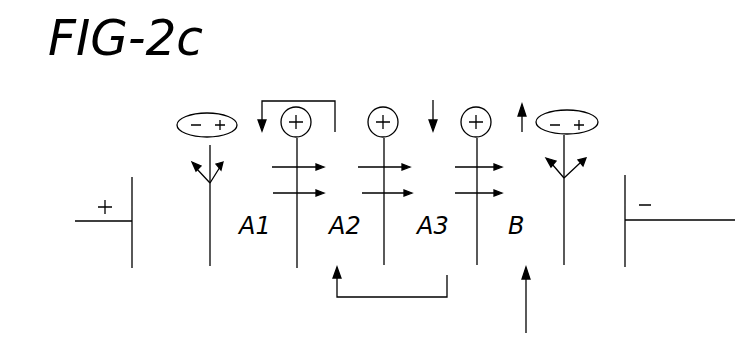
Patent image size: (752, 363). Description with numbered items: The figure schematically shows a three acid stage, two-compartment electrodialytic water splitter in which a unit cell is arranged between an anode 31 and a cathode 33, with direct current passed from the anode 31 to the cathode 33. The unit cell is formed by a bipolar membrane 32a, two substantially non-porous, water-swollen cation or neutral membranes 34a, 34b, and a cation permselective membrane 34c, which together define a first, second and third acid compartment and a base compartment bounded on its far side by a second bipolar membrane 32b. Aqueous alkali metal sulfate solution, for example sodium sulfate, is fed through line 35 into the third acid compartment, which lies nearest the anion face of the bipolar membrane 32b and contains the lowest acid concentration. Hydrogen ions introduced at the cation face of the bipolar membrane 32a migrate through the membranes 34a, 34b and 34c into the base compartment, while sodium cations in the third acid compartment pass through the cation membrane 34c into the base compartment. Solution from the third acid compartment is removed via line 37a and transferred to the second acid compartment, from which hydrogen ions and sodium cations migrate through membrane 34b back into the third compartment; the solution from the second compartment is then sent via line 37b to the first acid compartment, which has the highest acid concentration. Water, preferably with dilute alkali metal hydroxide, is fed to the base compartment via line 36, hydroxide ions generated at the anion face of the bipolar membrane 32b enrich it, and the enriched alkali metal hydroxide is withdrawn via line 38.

The anode 31 is at (132, 243).
The bipolar membrane 32a is at (210, 266).
The bipolar membrane 32b is at (564, 265).
The cathode 33 is at (625, 255).
The cation or neutral membrane 34a is at (297, 268).
The cation or neutral membrane 34b is at (384, 265).
The cation permselective membrane 34c is at (477, 265).
The line 35 is at (433, 100).
The line 36 is at (526, 323).
The line 37a is at (383, 297).
The line 37b is at (293, 101).
The line 38 is at (522, 126).